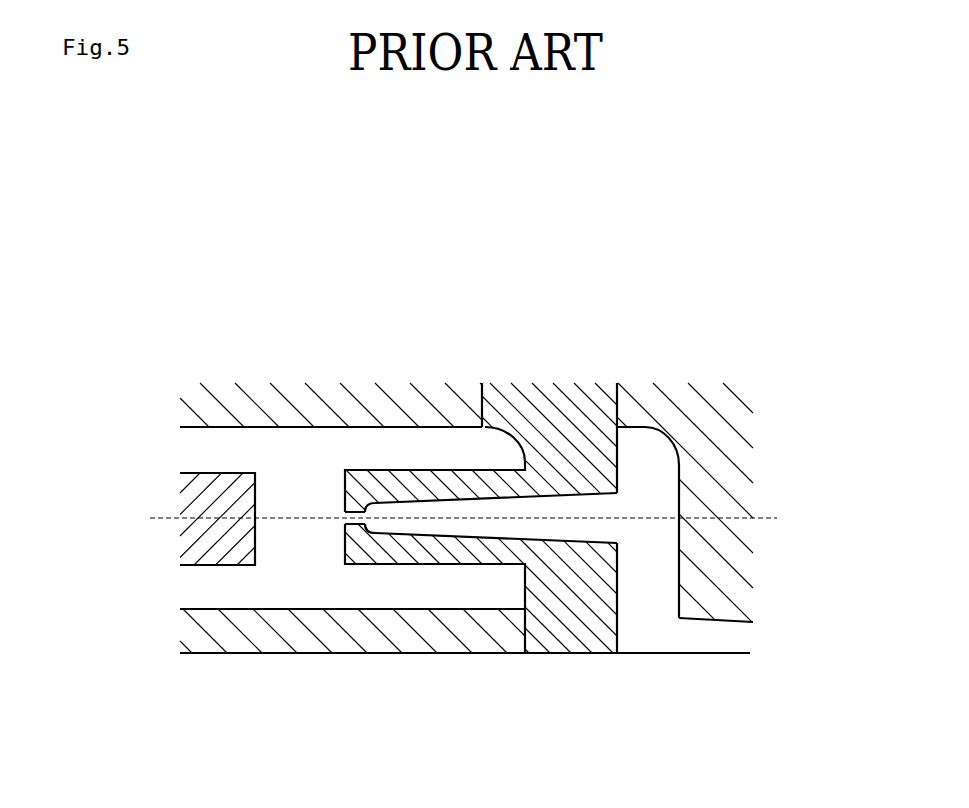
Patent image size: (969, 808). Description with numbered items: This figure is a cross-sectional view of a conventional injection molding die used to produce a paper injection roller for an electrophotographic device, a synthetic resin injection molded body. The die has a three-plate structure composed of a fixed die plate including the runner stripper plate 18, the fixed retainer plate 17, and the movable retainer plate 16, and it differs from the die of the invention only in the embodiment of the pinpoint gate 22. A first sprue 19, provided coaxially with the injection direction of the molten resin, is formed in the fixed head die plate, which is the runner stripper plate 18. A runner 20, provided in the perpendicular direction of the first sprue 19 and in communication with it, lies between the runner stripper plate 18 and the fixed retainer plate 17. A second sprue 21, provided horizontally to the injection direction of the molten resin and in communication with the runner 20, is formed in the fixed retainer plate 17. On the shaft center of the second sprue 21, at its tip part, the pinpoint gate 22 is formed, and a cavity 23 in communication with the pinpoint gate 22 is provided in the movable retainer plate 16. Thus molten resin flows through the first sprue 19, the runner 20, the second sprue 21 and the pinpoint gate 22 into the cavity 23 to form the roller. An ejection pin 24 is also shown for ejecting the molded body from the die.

The movable retainer plate 16 is at (315, 400).
The fixed retainer plate 17 is at (540, 398).
The runner stripper plate 18 is at (692, 400).
The first sprue 19 is at (700, 640).
The runner 20 is at (657, 484).
The second sprue 21 is at (513, 525).
The pinpoint gate 22 is at (352, 520).
The cavity 23 is at (210, 457).
The ejection pin 24 is at (192, 538).